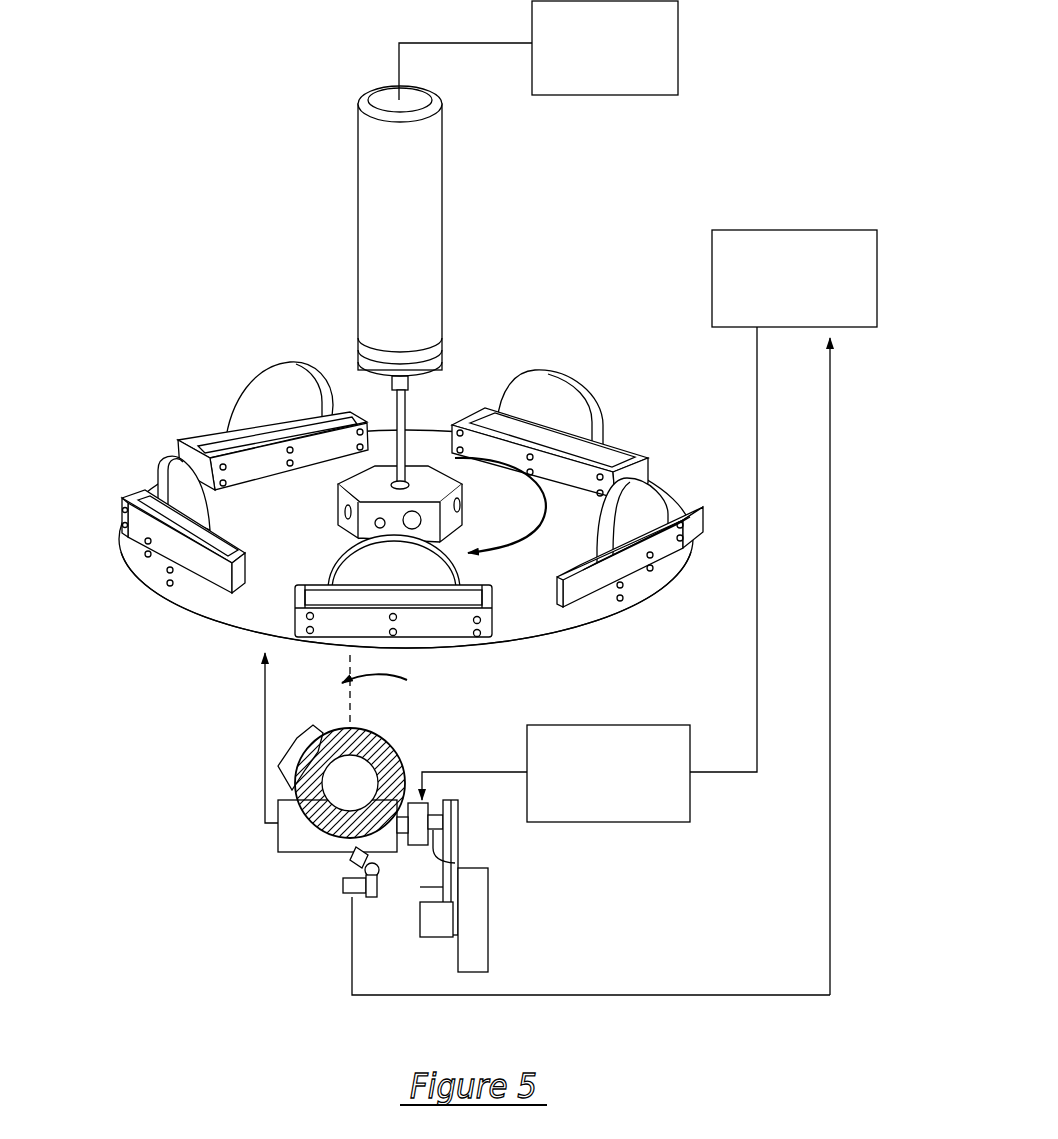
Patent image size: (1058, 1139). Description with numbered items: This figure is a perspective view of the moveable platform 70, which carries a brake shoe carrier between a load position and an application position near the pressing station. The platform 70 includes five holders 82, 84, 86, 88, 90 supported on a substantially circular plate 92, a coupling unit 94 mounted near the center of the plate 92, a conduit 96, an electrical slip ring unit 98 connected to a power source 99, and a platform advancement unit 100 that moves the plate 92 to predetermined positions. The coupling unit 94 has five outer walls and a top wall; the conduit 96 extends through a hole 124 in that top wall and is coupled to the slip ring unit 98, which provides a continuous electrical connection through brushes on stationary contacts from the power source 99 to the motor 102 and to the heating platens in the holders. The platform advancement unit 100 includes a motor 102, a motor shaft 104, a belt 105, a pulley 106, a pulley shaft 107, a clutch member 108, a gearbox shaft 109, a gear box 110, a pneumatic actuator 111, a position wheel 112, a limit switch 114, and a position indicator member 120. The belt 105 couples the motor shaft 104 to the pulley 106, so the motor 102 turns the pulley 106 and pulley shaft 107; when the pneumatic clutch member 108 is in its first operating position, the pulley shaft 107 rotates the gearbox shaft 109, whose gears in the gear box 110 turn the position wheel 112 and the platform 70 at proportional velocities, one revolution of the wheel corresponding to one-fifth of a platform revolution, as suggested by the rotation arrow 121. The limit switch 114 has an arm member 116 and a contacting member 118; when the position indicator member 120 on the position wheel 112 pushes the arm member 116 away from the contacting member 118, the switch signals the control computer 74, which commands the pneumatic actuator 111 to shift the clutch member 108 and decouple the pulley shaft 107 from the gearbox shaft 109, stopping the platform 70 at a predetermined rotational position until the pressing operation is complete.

The moveable platform 70 is at (680, 485).
The control computer 74 is at (787, 228).
The holder 82 is at (215, 440).
The holder 84 is at (627, 447).
The holder 86 is at (685, 522).
The holder 88 is at (493, 618).
The holder 90 is at (158, 567).
The plate 92 is at (653, 607).
The coupling unit 94 is at (338, 532).
The conduit 96 is at (388, 398).
The electrical slip ring unit 98 is at (428, 228).
The power source 99 is at (678, 42).
The platform advancement unit 100 is at (252, 728).
The motor 102 is at (490, 917).
The motor shaft 104 is at (433, 928).
The belt 105 is at (420, 887).
The pulley 106 is at (458, 800).
The pulley shaft 107 is at (455, 863).
The clutch member 108 is at (422, 765).
The gearbox shaft 109 is at (416, 798).
The gear box 110 is at (290, 840).
The pneumatic actuator 111 is at (610, 725).
The position wheel 112 is at (363, 737).
The limit switch 114 is at (333, 873).
The arm member 116 is at (363, 853).
The contacting member 118 is at (343, 887).
The position indicator member 120 is at (293, 737).
The rotation direction arrow 121 is at (397, 677).
The hole 124 is at (463, 507).